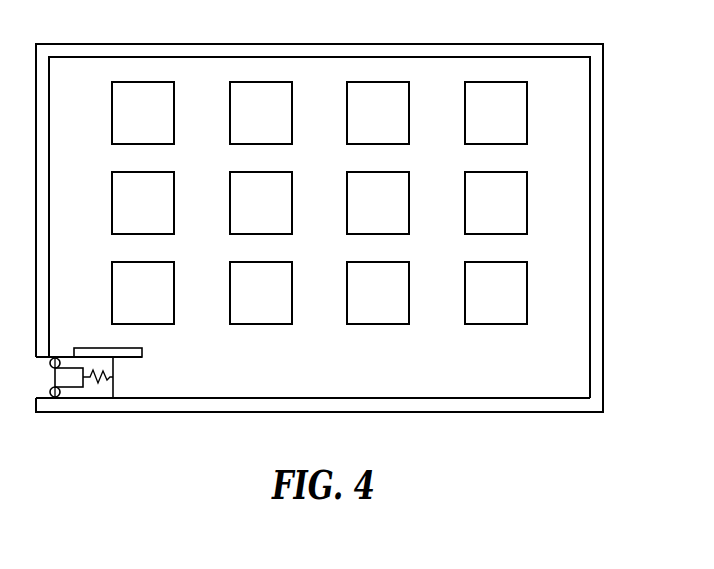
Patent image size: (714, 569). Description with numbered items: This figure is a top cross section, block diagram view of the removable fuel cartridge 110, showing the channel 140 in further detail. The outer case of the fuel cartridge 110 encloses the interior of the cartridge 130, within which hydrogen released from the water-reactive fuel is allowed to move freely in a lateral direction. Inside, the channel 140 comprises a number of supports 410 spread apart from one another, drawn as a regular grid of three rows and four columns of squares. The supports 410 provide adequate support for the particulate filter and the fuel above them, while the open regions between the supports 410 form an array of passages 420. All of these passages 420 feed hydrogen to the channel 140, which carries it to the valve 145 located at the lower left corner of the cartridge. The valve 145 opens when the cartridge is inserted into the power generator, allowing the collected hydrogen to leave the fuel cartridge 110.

The removable fuel cartridge 110 is at (603, 229).
The cartridge 130 is at (508, 405).
The channel 140 is at (131, 402).
The valve 145 is at (70, 382).
The supports 410 is at (500, 197).
The passages 420 is at (437, 92).